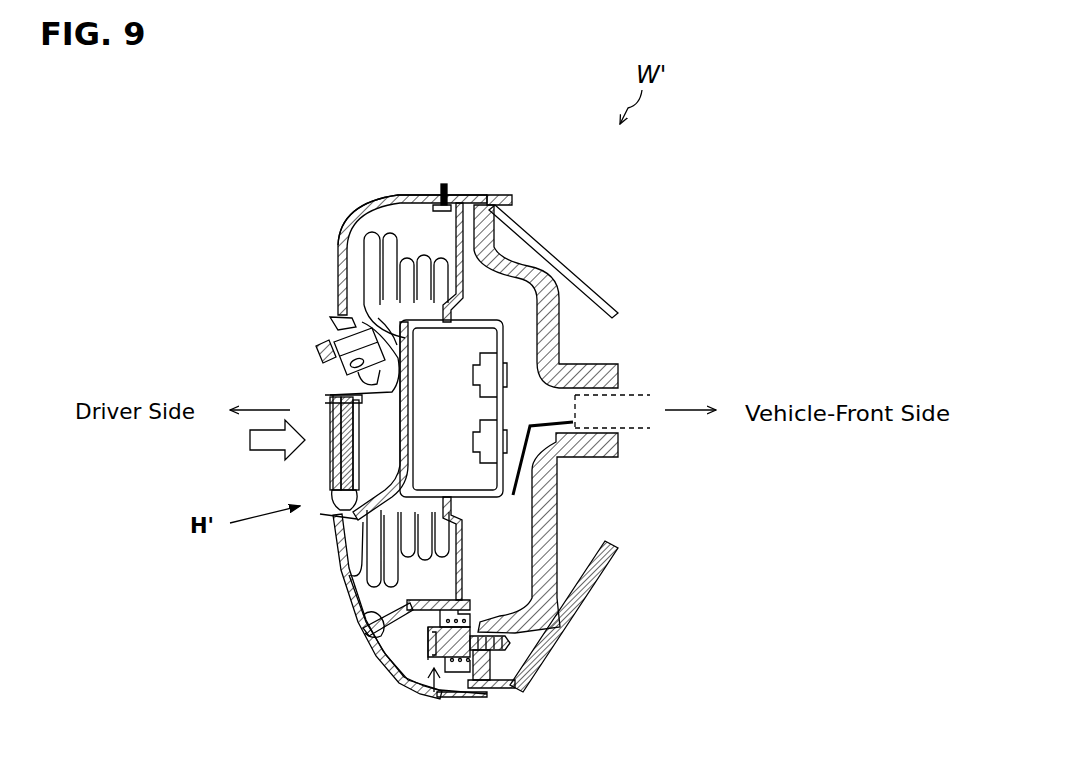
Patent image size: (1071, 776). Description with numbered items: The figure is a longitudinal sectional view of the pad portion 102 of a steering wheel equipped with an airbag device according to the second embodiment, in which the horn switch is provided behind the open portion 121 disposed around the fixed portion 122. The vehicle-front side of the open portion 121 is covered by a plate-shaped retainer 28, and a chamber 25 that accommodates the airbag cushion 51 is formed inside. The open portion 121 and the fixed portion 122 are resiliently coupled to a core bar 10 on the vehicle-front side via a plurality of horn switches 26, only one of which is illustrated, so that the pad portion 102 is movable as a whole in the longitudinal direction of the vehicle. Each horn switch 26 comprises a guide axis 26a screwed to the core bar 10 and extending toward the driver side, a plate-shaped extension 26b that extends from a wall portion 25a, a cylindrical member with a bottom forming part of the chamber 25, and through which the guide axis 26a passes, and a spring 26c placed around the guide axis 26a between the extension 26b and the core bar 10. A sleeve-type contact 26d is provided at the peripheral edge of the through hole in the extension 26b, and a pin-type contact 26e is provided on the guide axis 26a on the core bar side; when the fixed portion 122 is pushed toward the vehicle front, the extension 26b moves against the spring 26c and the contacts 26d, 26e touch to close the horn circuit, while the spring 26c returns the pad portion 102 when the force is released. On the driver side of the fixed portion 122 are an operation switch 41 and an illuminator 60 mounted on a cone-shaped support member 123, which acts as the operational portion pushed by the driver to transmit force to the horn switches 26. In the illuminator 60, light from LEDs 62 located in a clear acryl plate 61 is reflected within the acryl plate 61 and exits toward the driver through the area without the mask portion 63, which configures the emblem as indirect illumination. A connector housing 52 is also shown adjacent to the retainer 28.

The core bar 10 is at (555, 318).
The chamber 25 is at (428, 220).
The wall portion 25a is at (386, 630).
The horn switch 26 is at (432, 700).
The guide axis 26a is at (420, 672).
The extension 26b is at (431, 595).
The spring 26c is at (460, 662).
The sleeve-type contact 26d is at (450, 620).
The pin-type contact 26e is at (500, 683).
The retainer 28 is at (462, 560).
The operation switch 41 is at (322, 345).
The airbag cushion 51 is at (366, 573).
The connector housing 52 is at (506, 404).
The illuminator 60 is at (325, 466).
The acryl plate 61 is at (340, 487).
The LEDs 62 is at (333, 420).
The mask portion 63 is at (320, 448).
The pad portion 102 is at (276, 240).
The open portion 121 is at (343, 233).
The fixed portion 122 is at (290, 346).
The support member 123 is at (342, 522).